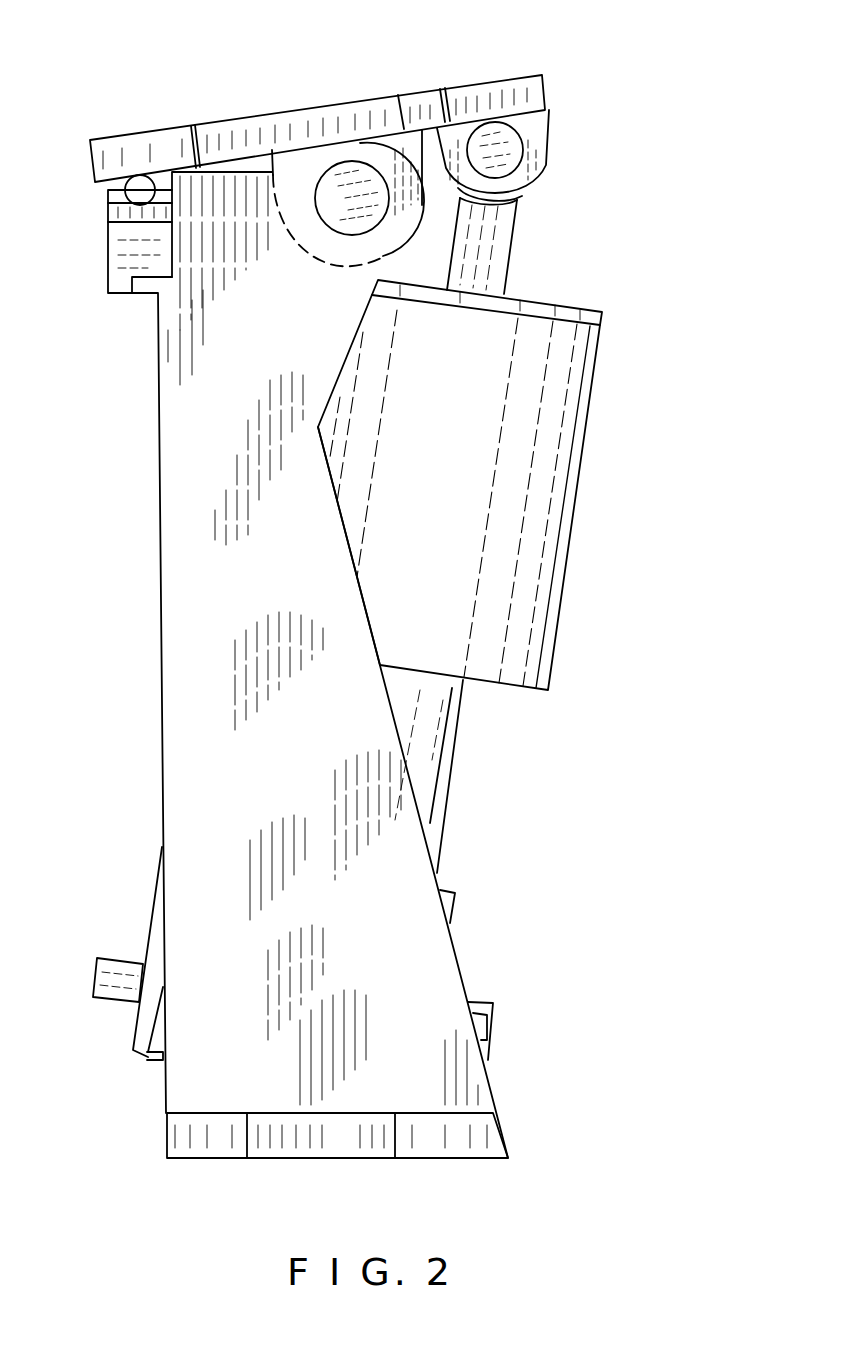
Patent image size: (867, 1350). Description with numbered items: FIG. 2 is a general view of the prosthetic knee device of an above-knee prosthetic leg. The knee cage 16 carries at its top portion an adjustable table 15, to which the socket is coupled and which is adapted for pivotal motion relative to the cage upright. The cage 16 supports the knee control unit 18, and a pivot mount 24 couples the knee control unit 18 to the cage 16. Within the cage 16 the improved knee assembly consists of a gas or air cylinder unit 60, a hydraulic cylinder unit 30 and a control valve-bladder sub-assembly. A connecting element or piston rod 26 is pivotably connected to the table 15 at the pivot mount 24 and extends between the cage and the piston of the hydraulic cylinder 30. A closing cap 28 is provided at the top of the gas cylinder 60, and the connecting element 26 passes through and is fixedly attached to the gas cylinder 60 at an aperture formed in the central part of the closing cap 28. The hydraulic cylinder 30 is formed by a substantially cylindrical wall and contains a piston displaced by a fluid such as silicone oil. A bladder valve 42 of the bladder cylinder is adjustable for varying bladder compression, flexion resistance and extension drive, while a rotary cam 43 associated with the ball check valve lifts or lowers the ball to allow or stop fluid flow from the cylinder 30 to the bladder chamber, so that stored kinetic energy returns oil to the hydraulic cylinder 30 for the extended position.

The adjustable table 15 is at (415, 92).
The knee cage 16 is at (160, 605).
The knee control unit 18 is at (534, 485).
The pivot mount 24 is at (527, 193).
The connecting element 26 is at (493, 252).
The closing cap 28 is at (553, 307).
The hydraulic cylinder 30 is at (468, 857).
The bladder valve 42 is at (108, 1002).
The rotary cam 43 is at (487, 1033).
The gas cylinder unit 60 is at (602, 405).